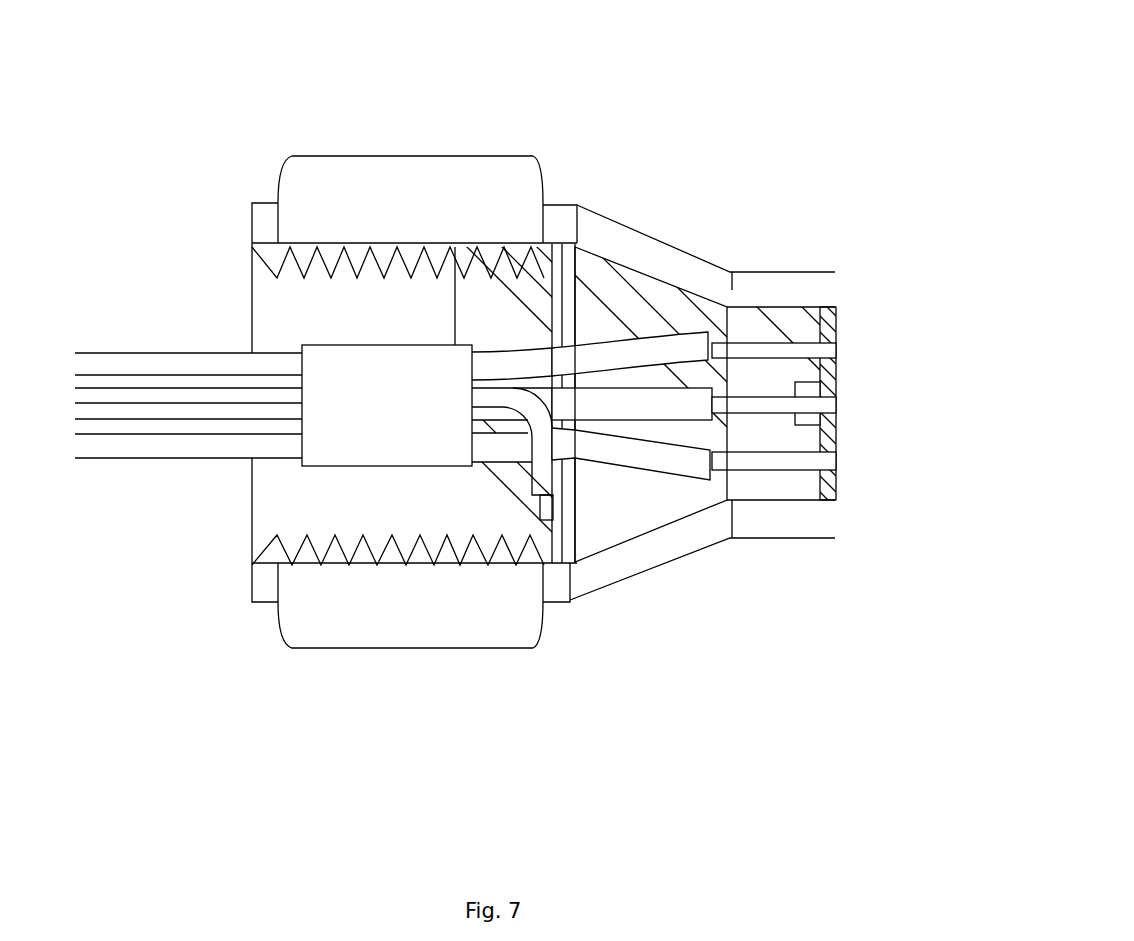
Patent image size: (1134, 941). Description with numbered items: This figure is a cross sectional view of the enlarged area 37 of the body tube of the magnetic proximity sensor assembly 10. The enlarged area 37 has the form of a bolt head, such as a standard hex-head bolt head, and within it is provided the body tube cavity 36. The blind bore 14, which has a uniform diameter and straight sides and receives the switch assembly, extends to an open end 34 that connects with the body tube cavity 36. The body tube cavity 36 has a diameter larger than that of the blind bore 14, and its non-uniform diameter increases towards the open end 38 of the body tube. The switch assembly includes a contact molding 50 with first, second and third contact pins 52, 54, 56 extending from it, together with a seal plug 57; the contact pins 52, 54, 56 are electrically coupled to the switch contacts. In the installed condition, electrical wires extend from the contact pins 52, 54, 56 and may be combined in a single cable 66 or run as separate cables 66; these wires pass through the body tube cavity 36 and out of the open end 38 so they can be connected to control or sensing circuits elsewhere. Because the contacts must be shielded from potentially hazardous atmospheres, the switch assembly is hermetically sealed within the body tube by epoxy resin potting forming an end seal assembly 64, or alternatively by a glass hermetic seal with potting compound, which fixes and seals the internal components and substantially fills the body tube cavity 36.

The magnetic proximity sensor assembly 10 is at (855, 218).
The blind bore 14 is at (807, 327).
The open end 34 is at (733, 326).
The body tube cavity 36 is at (512, 325).
The enlarged area 37 is at (318, 175).
The open end 38 is at (242, 302).
The contact molding 50 is at (823, 327).
The first contact pin 52 is at (773, 348).
The second contact pin 54 is at (762, 403).
The third contact pin 56 is at (773, 457).
The seal plug 57 is at (808, 388).
The end seal assembly 64 is at (512, 498).
The cable 66 is at (656, 348).